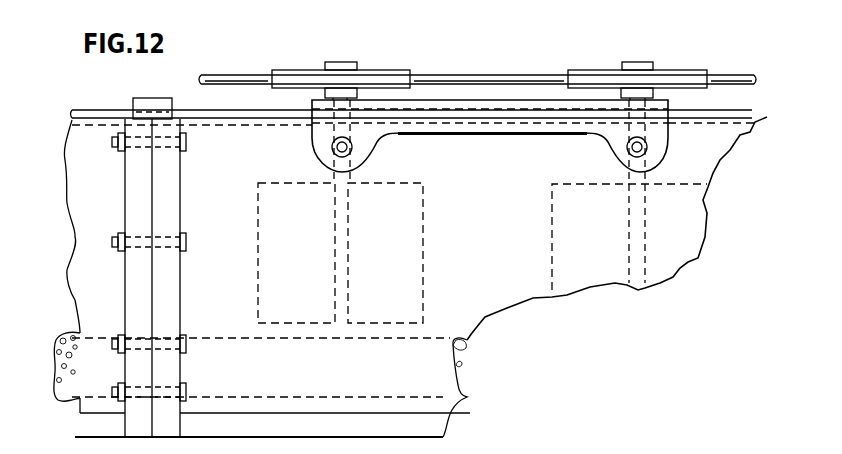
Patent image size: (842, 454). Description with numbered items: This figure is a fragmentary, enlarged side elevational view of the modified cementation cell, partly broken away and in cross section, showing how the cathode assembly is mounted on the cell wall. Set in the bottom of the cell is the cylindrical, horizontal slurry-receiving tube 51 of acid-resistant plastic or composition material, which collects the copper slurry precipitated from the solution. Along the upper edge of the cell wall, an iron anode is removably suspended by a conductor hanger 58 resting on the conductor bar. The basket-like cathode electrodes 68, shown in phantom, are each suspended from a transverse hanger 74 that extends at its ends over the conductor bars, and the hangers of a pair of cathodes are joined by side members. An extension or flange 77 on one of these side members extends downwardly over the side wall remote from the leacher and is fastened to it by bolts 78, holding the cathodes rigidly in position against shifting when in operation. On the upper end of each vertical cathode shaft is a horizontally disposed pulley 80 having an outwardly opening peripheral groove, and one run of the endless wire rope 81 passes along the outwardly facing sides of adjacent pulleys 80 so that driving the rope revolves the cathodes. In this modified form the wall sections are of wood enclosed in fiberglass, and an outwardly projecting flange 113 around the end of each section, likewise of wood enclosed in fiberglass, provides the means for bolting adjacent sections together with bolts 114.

The slurry-receiving tube 51 is at (77, 366).
The conductor hanger 58 is at (155, 98).
The electrode 68 is at (551, 200).
The transverse hanger 74 is at (312, 103).
The flange 77 is at (486, 134).
The bolt 78 is at (333, 147).
The pulley 80 is at (310, 70).
The endless wire rope 81 is at (535, 74).
The outwardly projecting flange 113 is at (158, 173).
The bolt 114 is at (186, 148).